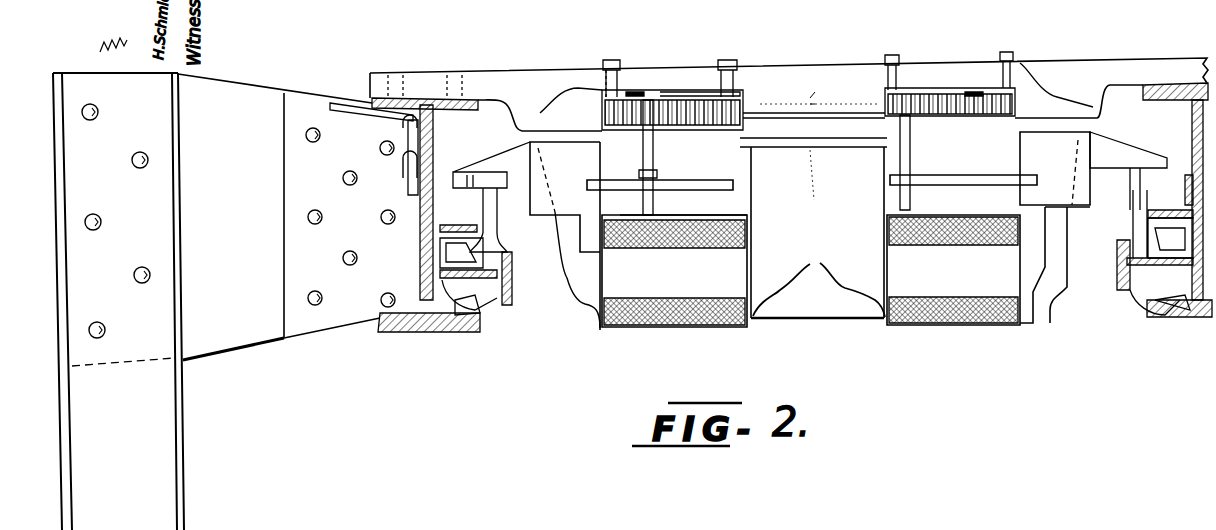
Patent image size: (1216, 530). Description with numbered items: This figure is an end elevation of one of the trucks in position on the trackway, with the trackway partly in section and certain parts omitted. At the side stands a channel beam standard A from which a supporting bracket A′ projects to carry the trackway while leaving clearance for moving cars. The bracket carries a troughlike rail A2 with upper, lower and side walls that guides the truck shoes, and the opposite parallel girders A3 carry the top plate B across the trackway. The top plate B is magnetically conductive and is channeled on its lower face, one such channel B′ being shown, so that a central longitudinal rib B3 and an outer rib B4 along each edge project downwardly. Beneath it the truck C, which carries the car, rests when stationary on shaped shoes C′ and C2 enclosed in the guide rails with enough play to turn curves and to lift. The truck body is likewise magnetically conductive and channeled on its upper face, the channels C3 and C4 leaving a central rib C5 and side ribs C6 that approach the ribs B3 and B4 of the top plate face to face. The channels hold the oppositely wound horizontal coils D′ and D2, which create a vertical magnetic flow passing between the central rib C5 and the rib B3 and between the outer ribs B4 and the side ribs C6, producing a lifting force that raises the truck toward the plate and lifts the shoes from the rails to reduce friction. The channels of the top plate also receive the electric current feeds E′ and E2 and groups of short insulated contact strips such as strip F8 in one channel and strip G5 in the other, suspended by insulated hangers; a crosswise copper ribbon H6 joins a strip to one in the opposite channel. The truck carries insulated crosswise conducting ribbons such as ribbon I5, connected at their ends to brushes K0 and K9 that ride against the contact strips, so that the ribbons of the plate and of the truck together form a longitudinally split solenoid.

The channel beam standard A is at (118, 301).
The supporting bracket A′ is at (300, 337).
The rail A2 is at (495, 305).
The girder A3 is at (440, 325).
The top plate B is at (540, 73).
The channel B′ is at (655, 92).
The central longitudinal rib B3 is at (837, 91).
The outer rib B4 is at (578, 115).
The truck C is at (819, 288).
The shoe C′ is at (500, 240).
The shoe C2 is at (1130, 225).
The channel C3 is at (632, 230).
The channel C4 is at (1036, 265).
The central rib C5 is at (875, 160).
The side rib C6 is at (810, 231).
The horizontal coil D′ is at (660, 245).
The horizontal coil D2 is at (968, 240).
The electric current feed E′ is at (636, 92).
The electric current feed E2 is at (975, 92).
The contact strip F8 is at (648, 100).
The contact strip G5 is at (938, 88).
The copper ribbon H6 is at (775, 115).
The crosswise conducting ribbon I5 is at (782, 150).
The brush K0 is at (660, 140).
The brush K9 is at (920, 140).